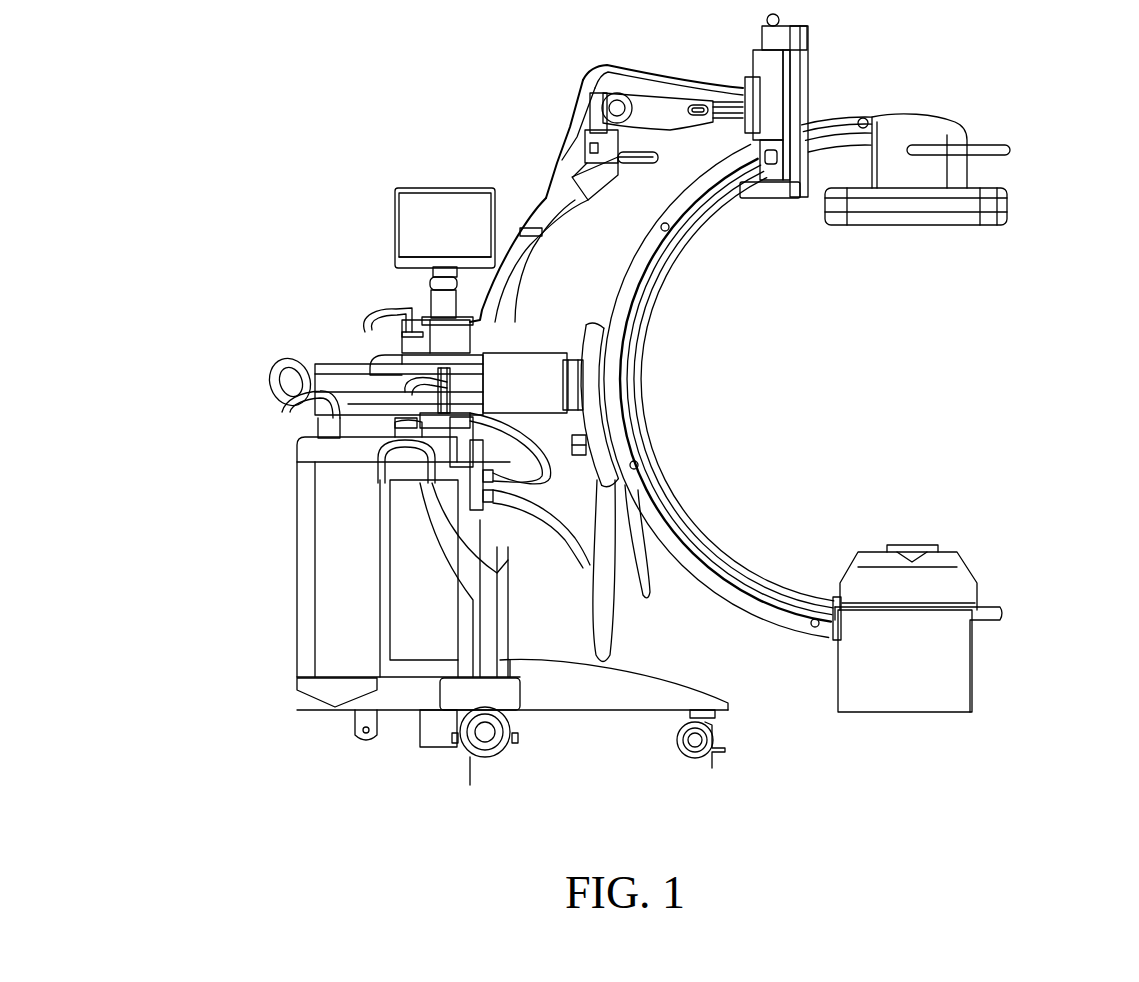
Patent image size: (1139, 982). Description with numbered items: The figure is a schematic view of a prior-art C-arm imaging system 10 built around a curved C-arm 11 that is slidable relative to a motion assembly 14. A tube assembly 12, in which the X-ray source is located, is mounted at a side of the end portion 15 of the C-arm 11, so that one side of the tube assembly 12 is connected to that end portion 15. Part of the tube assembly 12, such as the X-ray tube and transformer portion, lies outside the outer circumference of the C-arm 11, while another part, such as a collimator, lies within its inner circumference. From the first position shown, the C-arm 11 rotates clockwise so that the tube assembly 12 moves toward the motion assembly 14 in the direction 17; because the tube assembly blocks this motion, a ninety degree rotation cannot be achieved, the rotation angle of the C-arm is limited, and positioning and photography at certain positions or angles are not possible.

The C-arm imaging system 10 is at (283, 124).
The C-arm 11 is at (722, 561).
The tube assembly 12 is at (953, 663).
The motion assembly 14 is at (598, 366).
The end portion 15 is at (820, 656).
The direction 17 is at (702, 372).